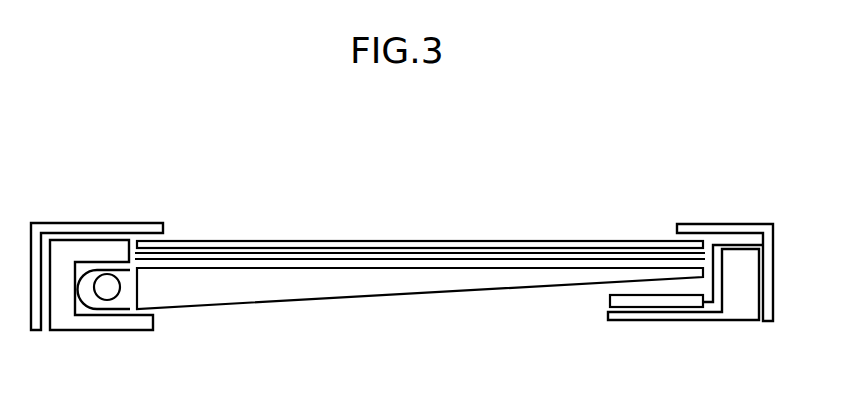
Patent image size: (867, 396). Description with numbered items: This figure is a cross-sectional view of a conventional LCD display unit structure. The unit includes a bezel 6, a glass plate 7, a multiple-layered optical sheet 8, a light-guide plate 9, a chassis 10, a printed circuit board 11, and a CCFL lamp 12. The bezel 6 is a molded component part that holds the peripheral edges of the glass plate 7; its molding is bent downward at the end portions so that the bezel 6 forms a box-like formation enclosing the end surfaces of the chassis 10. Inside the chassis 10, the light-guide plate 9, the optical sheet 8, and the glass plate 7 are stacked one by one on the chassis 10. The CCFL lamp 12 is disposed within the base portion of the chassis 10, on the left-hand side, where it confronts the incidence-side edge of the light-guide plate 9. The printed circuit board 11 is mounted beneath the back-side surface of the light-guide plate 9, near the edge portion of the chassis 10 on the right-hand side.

The bezel 6 is at (92, 222).
The glass plate 7 is at (527, 241).
The multiple-layered optical sheet 8 is at (468, 253).
The light-guide plate 9 is at (427, 291).
The chassis 10 is at (80, 330).
The printed circuit board 11 is at (660, 302).
The CCFL (cold cathode fluorescent lamp) 12 is at (108, 293).